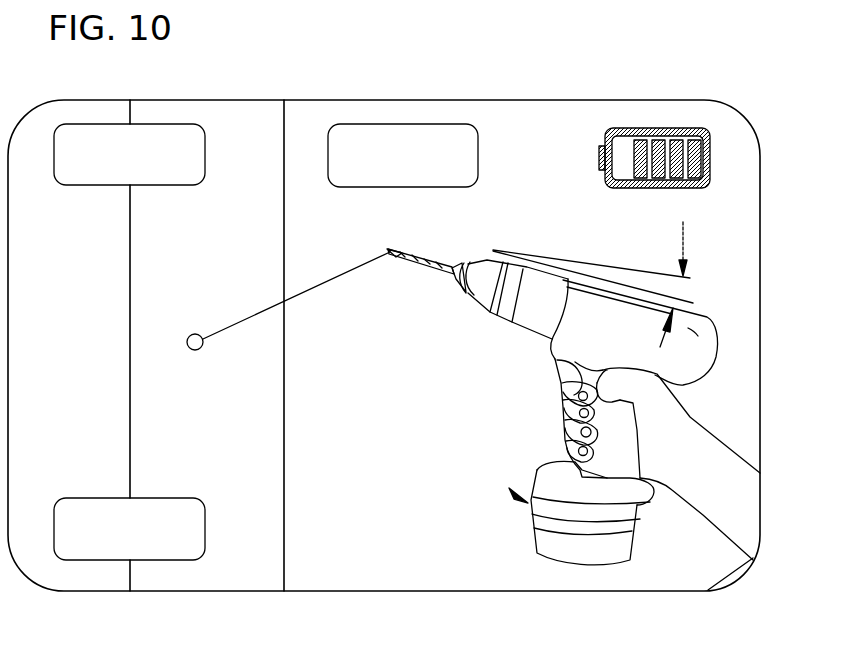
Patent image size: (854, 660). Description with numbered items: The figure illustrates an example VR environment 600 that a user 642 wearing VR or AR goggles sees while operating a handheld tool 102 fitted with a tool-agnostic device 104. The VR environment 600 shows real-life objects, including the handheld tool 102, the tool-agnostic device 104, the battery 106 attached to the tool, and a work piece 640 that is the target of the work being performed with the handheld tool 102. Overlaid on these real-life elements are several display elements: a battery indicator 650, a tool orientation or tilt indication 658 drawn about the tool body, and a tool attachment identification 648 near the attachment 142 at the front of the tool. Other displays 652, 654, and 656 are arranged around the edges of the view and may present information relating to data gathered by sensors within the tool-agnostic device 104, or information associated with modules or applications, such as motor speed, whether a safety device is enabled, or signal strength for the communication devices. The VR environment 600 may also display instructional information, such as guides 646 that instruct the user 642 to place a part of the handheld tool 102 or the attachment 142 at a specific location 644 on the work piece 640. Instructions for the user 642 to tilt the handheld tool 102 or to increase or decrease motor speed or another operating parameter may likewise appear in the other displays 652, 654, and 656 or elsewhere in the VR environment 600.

The VR environment 600 is at (370, 90).
The work piece 640 is at (238, 563).
The user 642 is at (724, 483).
The location 644 is at (197, 351).
The guides 646 is at (316, 288).
The tool attachment identification 648 is at (430, 262).
The battery indicator 650 is at (605, 143).
The other display 652 is at (419, 161).
The other display 654 is at (144, 166).
The other display 656 is at (144, 538).
The tool orientation or tilt indication 658 is at (585, 264).
The handheld tool 102 is at (550, 340).
The tool-agnostic device 104 is at (508, 492).
The battery 106 is at (532, 540).
The attachment 142 is at (412, 264).